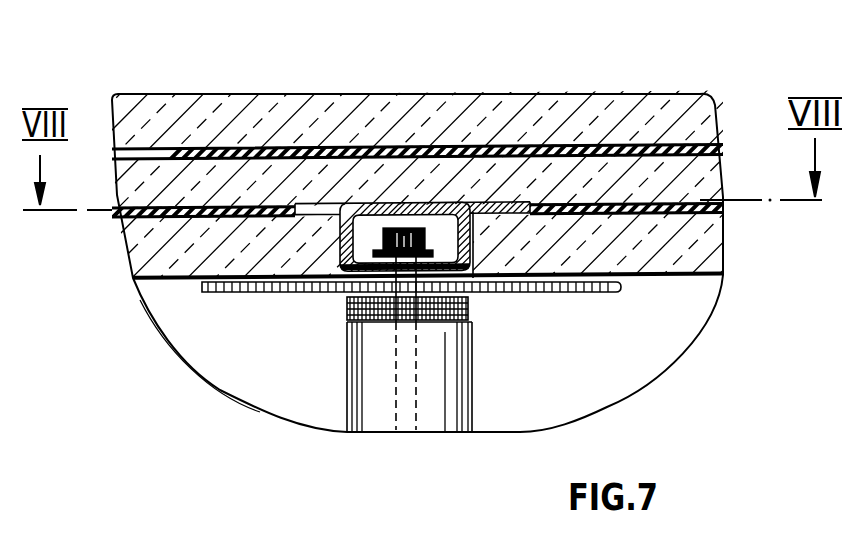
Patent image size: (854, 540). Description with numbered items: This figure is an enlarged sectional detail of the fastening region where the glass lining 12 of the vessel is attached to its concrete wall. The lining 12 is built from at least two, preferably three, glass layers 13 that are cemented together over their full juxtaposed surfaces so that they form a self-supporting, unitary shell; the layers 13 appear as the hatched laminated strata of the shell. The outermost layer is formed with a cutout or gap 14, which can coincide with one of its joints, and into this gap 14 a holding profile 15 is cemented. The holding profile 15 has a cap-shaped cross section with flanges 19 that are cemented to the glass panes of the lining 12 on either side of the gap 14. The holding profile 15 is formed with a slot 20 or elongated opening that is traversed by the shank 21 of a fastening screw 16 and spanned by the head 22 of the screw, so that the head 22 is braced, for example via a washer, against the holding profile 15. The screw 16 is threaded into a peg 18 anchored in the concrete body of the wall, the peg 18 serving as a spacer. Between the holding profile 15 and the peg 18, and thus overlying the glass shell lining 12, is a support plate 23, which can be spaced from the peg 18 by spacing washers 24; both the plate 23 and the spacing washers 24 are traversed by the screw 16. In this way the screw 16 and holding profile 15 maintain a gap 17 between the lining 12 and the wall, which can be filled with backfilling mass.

The lining 12 is at (688, 310).
The glass layers 13 is at (214, 205).
The gap 14 is at (340, 248).
The holding profile 15 is at (480, 232).
The fastening screw 16 is at (398, 295).
The gap 17 is at (188, 333).
The peg 18 is at (360, 398).
The flanges 19 is at (327, 207).
The slot 20 is at (376, 250).
The shank 21 is at (420, 385).
The head 22 is at (402, 229).
The support plate 23 is at (200, 292).
The spacing washers 24 is at (470, 338).